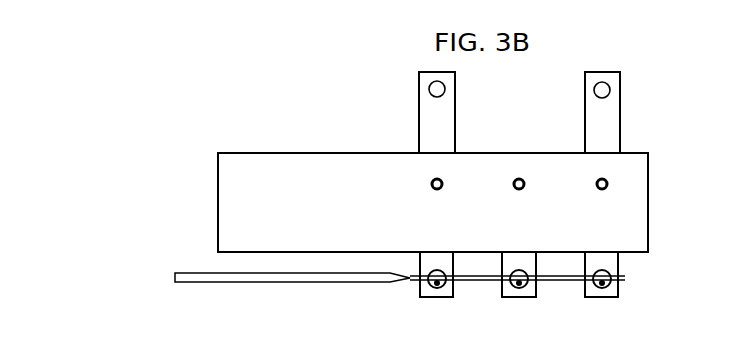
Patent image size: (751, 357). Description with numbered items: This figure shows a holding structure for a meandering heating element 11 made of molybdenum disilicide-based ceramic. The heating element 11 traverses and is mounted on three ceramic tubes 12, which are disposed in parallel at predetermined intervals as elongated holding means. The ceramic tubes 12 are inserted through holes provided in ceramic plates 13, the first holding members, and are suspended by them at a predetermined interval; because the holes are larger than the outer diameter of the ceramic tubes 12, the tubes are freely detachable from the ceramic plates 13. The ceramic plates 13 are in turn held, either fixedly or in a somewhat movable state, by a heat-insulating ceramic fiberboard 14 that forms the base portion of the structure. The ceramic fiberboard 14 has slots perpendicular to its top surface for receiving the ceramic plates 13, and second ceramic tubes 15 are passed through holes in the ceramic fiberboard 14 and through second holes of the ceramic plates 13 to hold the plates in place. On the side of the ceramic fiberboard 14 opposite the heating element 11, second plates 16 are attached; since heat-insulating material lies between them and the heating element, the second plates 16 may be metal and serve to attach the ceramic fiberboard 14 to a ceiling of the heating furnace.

The heating element 11 is at (330, 283).
The ceramic tubes 12 is at (522, 288).
The ceramic plates 13 is at (604, 262).
The ceramic fiberboard 14 is at (630, 193).
The second ceramic tubes 15 is at (518, 180).
The second plates 16 is at (428, 85).